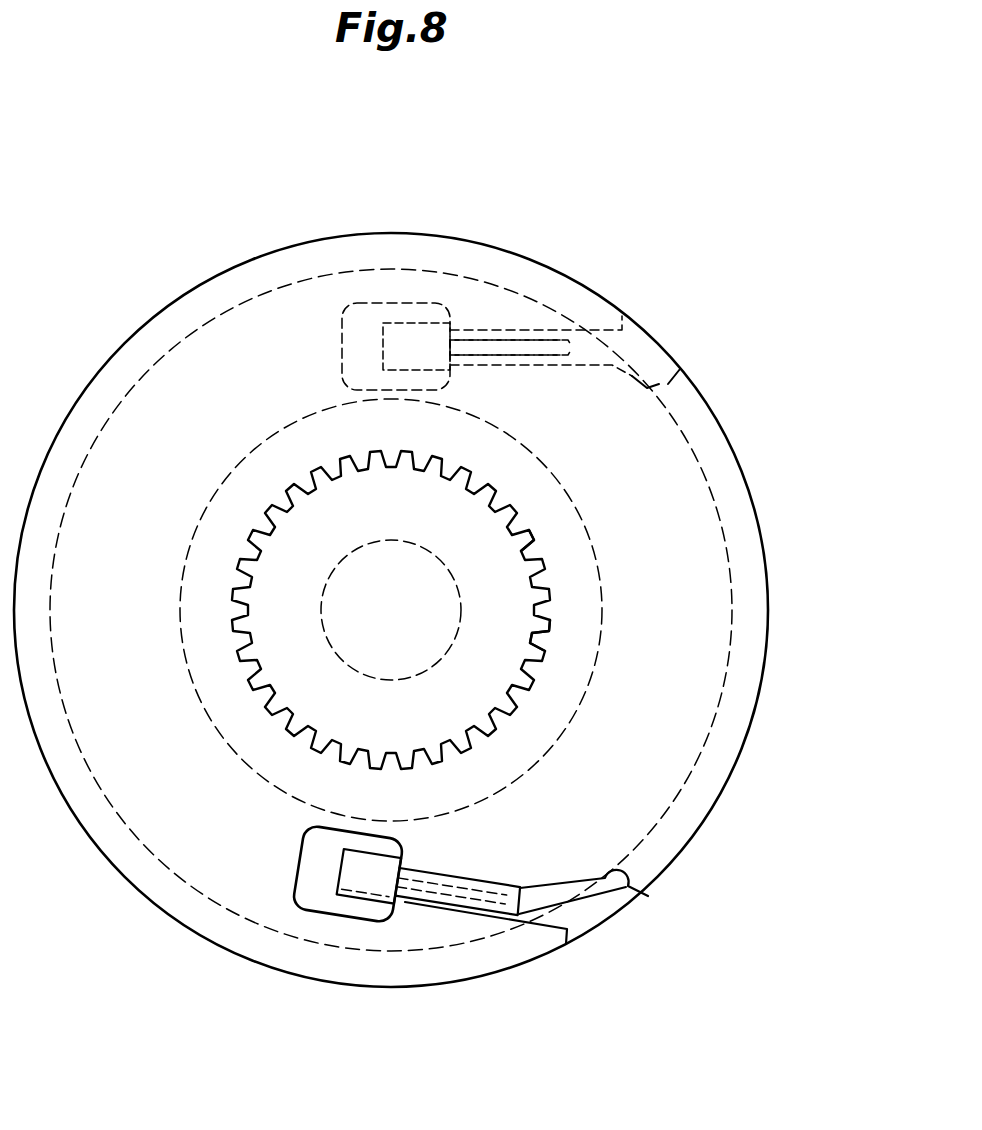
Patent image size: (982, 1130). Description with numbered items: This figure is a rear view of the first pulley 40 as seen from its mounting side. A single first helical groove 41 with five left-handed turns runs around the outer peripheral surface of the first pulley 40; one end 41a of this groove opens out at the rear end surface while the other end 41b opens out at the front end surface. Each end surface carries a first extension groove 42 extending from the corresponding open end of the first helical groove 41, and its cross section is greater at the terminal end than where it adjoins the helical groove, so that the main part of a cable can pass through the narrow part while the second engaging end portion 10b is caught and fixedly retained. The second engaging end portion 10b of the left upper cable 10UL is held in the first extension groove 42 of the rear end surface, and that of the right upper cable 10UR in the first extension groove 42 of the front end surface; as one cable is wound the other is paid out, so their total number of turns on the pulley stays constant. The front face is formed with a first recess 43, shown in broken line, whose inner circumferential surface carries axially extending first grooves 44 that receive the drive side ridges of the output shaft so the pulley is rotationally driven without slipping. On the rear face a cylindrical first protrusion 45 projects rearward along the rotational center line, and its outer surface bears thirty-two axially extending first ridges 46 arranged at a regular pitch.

The first pulley 40 is at (641, 164).
The first helical groove 41 is at (263, 297).
The one end of the first helical groove 41a is at (624, 890).
The another end of the first helical groove 41b is at (662, 387).
The first extension groove 42 is at (395, 308).
The second engaging end portion 10b is at (428, 323).
The right upper cable 10UR is at (507, 337).
The left upper cable 10UL is at (450, 913).
The first recess 43 is at (546, 564).
The first grooves 44 is at (535, 532).
The first protrusion 45 is at (560, 658).
The first ridges 46 is at (557, 632).